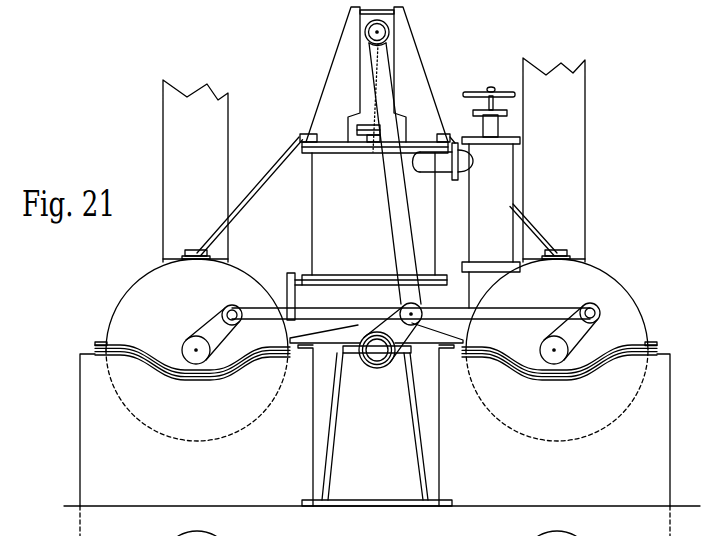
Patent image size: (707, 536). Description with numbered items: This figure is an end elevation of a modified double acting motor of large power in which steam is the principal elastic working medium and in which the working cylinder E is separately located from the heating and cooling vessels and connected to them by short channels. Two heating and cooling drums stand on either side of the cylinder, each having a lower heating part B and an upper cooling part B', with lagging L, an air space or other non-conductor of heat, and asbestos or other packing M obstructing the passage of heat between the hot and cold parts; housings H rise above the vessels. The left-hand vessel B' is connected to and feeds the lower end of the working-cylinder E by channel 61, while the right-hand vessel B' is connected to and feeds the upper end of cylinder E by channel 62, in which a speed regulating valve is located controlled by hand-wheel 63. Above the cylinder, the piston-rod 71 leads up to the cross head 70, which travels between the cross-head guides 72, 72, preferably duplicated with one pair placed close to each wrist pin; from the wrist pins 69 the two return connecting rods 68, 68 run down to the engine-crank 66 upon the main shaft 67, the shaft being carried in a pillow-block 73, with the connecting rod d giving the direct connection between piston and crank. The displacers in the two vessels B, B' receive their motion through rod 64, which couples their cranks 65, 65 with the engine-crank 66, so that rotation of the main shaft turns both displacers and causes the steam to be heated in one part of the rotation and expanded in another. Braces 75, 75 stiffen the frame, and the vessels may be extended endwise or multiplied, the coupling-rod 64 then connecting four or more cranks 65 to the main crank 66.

The channel 61 is at (306, 296).
The channel 62 is at (467, 222).
The hand-wheel 63 is at (486, 92).
The rod 64 is at (379, 311).
The cranks 65 is at (391, 333).
The engine-crank 66 is at (393, 332).
The main shaft 67 is at (376, 345).
The return connecting rods 68 is at (395, 173).
The wrist pins 69 is at (380, 32).
The cross head 70 is at (390, 19).
The piston-rod 71 is at (373, 103).
The cross-head guides 72 is at (377, 74).
The pillow-block 73 is at (331, 421).
The braces 75 is at (246, 202).
The working cylinder E is at (375, 213).
The housing H is at (374, 160).
The cooling part of the chamber B' is at (377, 304).
The heating part of the chamber B is at (377, 395).
The lagging L is at (372, 429).
The packing M is at (95, 344).
The connecting rod d is at (402, 243).